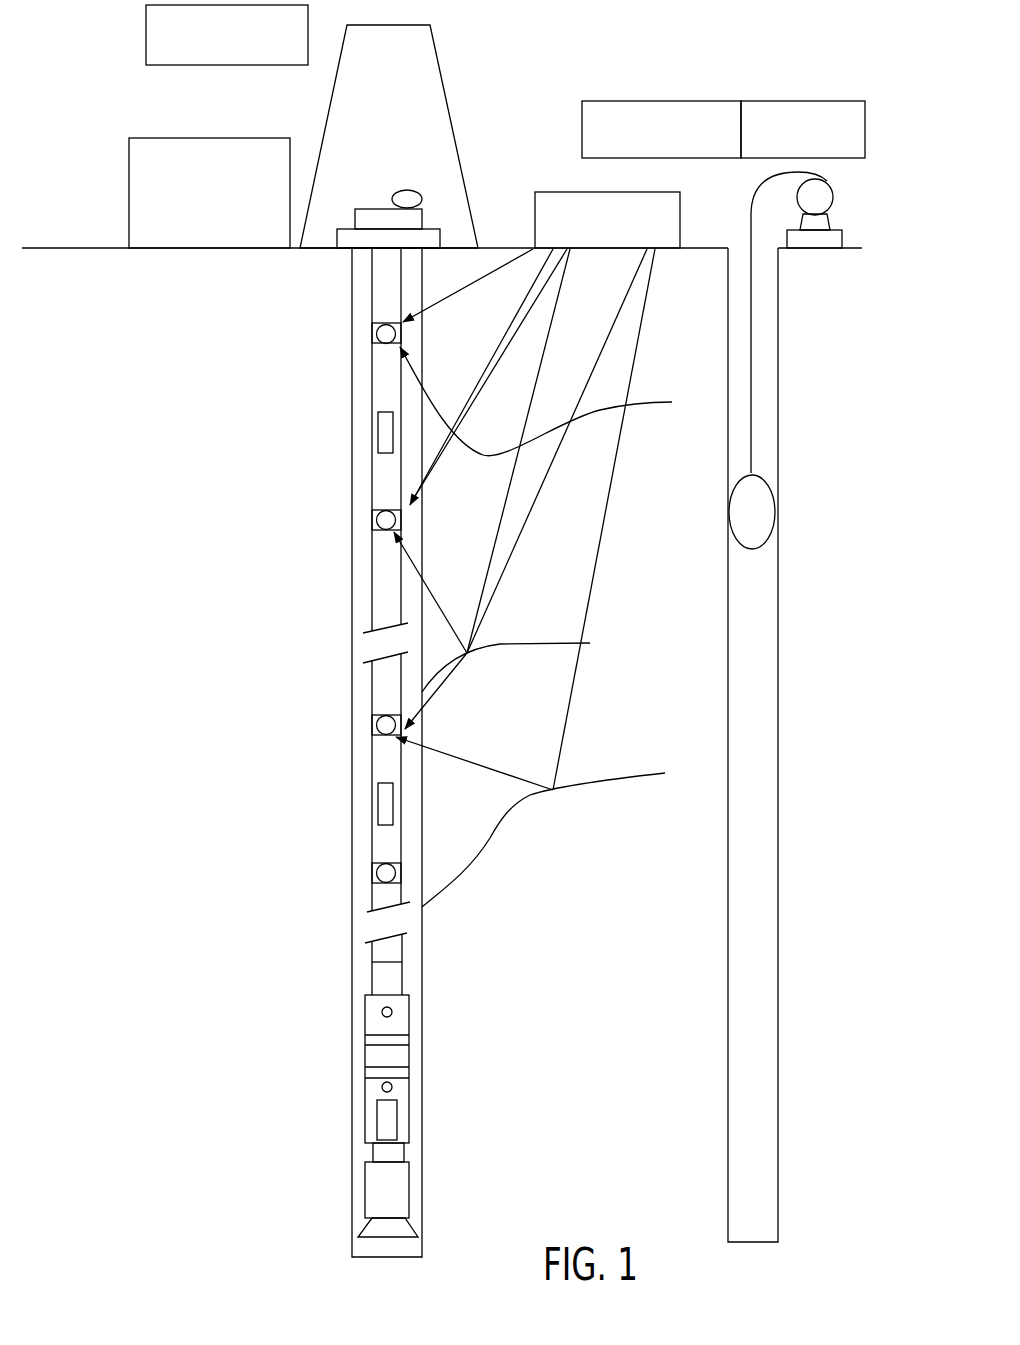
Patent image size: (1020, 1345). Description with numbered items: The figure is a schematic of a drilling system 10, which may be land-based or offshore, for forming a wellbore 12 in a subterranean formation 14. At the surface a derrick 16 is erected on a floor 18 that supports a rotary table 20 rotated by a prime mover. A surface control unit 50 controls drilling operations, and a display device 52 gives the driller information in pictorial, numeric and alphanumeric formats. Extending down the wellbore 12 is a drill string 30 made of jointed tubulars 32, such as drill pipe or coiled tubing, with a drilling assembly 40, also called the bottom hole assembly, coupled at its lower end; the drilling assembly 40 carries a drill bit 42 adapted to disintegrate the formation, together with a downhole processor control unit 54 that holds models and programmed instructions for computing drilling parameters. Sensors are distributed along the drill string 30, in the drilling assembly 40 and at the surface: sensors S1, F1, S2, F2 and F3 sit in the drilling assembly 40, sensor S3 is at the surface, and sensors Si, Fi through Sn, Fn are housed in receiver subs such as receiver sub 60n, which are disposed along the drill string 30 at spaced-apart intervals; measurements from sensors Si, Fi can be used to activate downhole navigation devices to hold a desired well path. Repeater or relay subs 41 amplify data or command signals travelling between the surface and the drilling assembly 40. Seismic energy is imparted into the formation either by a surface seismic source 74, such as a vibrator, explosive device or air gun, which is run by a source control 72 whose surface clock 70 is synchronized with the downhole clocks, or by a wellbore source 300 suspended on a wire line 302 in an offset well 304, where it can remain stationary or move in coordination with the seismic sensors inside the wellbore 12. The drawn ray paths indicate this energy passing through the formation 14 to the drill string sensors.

The drilling system 10 is at (502, 118).
The wellbore 12 is at (422, 752).
The subterranean formation 14 is at (233, 1165).
The derrick 16 is at (400, 132).
The floor 18 is at (442, 277).
The rotary table 20 is at (429, 215).
The drill string 30 is at (342, 782).
The jointed tubulars 32 is at (368, 607).
The drilling assembly 40 is at (341, 1081).
The repeater or relay subs 41 is at (380, 437).
The drill bit 42 is at (351, 1241).
The surface control unit 50 is at (170, 193).
The display device 52 is at (185, 35).
The downhole processor control unit 54 is at (433, 1118).
The receiver sub 60n is at (372, 346).
The surface clock 70 is at (803, 105).
The source control 72 is at (661, 105).
The seismic source 74 is at (596, 194).
The wellbore source 300 is at (796, 534).
The wire line 302 is at (809, 322).
The offset well 304 is at (801, 745).
The sensor S3 is at (406, 189).
The sensor S2 is at (333, 994).
The sensor S1 is at (333, 1064).
The sensor F1 is at (426, 1069).
The sensor F2 is at (426, 1022).
The sensor F3 is at (424, 946).
The sensor Sn is at (375, 338).
The sensor Fn is at (334, 364).
The sensor Si is at (375, 878).
The sensor Fi is at (339, 896).